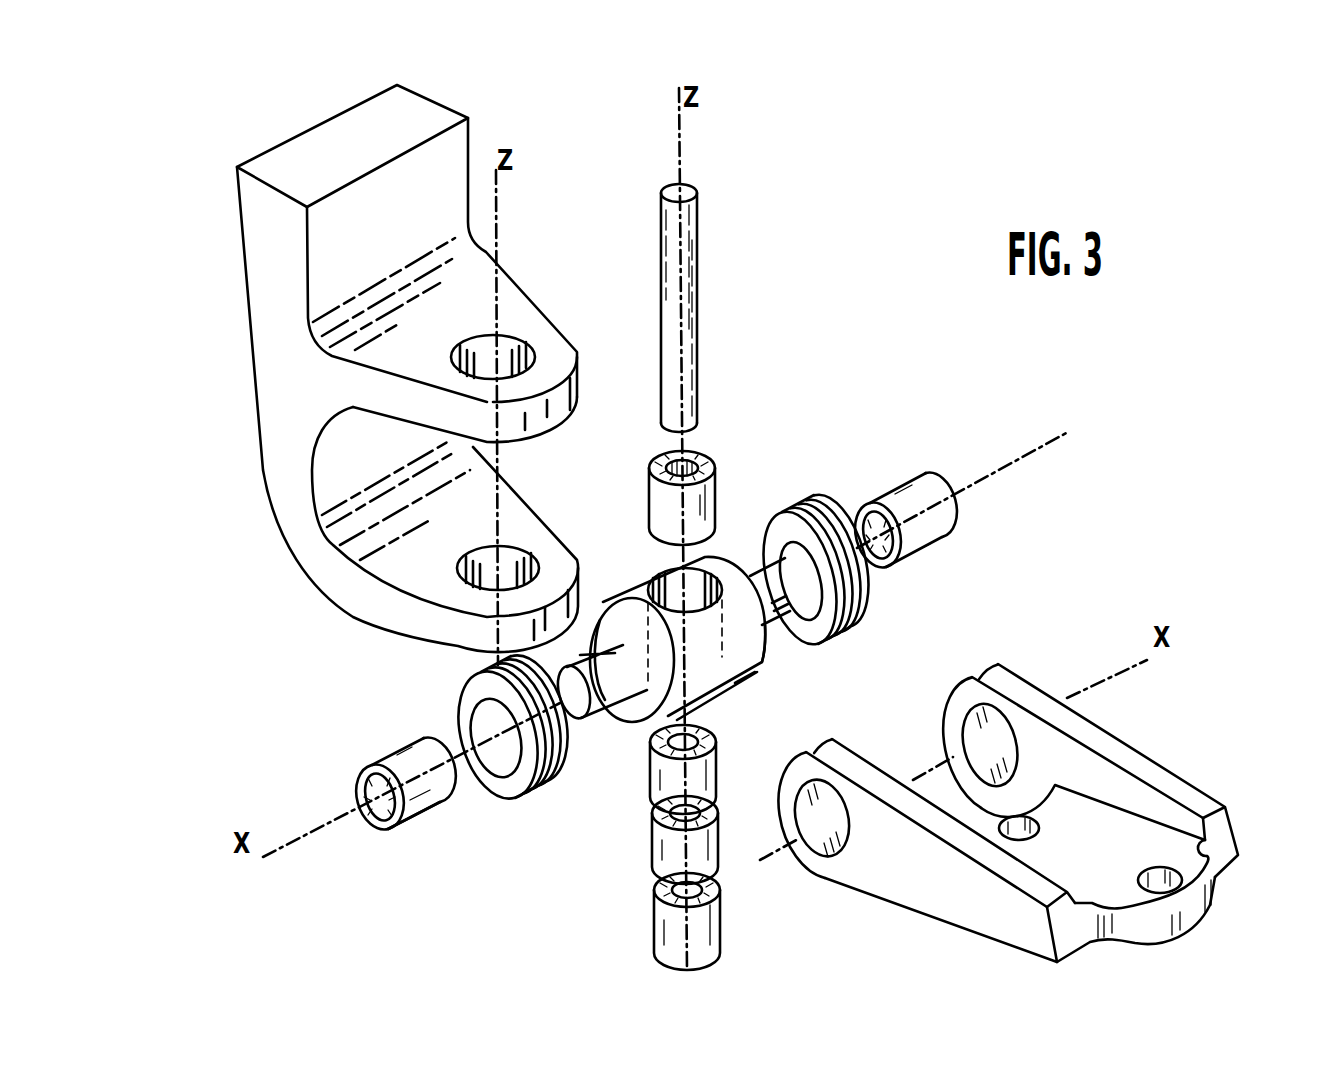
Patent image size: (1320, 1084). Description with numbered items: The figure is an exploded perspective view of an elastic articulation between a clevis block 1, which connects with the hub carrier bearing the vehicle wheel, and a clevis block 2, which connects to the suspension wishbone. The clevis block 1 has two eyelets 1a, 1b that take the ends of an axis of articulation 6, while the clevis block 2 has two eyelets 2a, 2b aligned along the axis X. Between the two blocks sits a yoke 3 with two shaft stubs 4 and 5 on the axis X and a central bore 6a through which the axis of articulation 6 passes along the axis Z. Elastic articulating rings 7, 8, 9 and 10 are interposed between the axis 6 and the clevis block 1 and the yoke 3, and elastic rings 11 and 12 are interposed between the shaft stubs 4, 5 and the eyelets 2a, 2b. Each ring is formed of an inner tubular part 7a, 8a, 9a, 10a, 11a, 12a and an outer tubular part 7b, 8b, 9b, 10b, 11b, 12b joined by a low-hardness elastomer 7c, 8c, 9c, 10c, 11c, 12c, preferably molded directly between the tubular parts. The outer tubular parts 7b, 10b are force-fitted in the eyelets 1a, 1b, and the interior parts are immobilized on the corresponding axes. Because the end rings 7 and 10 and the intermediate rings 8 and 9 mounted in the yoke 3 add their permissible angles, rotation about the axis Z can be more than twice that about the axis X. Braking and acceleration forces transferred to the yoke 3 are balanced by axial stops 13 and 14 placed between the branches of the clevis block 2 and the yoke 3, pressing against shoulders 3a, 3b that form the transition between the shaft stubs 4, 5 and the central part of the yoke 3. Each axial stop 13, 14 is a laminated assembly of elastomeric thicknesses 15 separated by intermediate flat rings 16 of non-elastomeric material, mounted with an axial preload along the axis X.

The clevis block 1 is at (256, 374).
The eyelet 1a is at (524, 343).
The eyelet 1b is at (518, 553).
The clevis block 2 is at (1012, 794).
The eyelet 2a is at (818, 873).
The eyelet 2b is at (1000, 718).
The yoke 3 is at (701, 603).
The shoulder 3a is at (615, 618).
The shoulder 3b is at (773, 660).
The shaft stub 4 is at (605, 722).
The shaft stub 5 is at (797, 651).
The axis of articulation 6 is at (692, 262).
The bore 6a is at (668, 592).
The elastic articulating ring 7 is at (662, 465).
The tubular part 7a is at (672, 455).
The tubular part 7b is at (656, 508).
The elastomer 7c is at (650, 462).
The elastic articulating ring 8 is at (685, 767).
The tubular part 8a is at (652, 741).
The tubular part 8b is at (652, 774).
The elastomer 8c is at (716, 727).
The elastic articulating ring 9 is at (687, 842).
The tubular part 9a is at (653, 813).
The tubular part 9b is at (652, 844).
The elastomer 9c is at (714, 814).
The elastic articulating ring 10 is at (688, 918).
The tubular part 10a is at (653, 880).
The tubular part 10b is at (653, 937).
The elastomer 10c is at (653, 907).
The elastic articulating ring 11 is at (371, 790).
The tubular part 11a is at (377, 823).
The tubular part 11b is at (396, 756).
The elastomer 11c is at (359, 787).
The elastic articulating ring 12 is at (919, 517).
The tubular part 12a is at (886, 563).
The tubular part 12b is at (887, 497).
The elastomer 12c is at (923, 553).
The axial stop 13 is at (447, 698).
The axial stop 14 is at (868, 612).
The elastomeric thicknesses 15 is at (828, 517).
The intermediate flat rings 16 is at (812, 518).